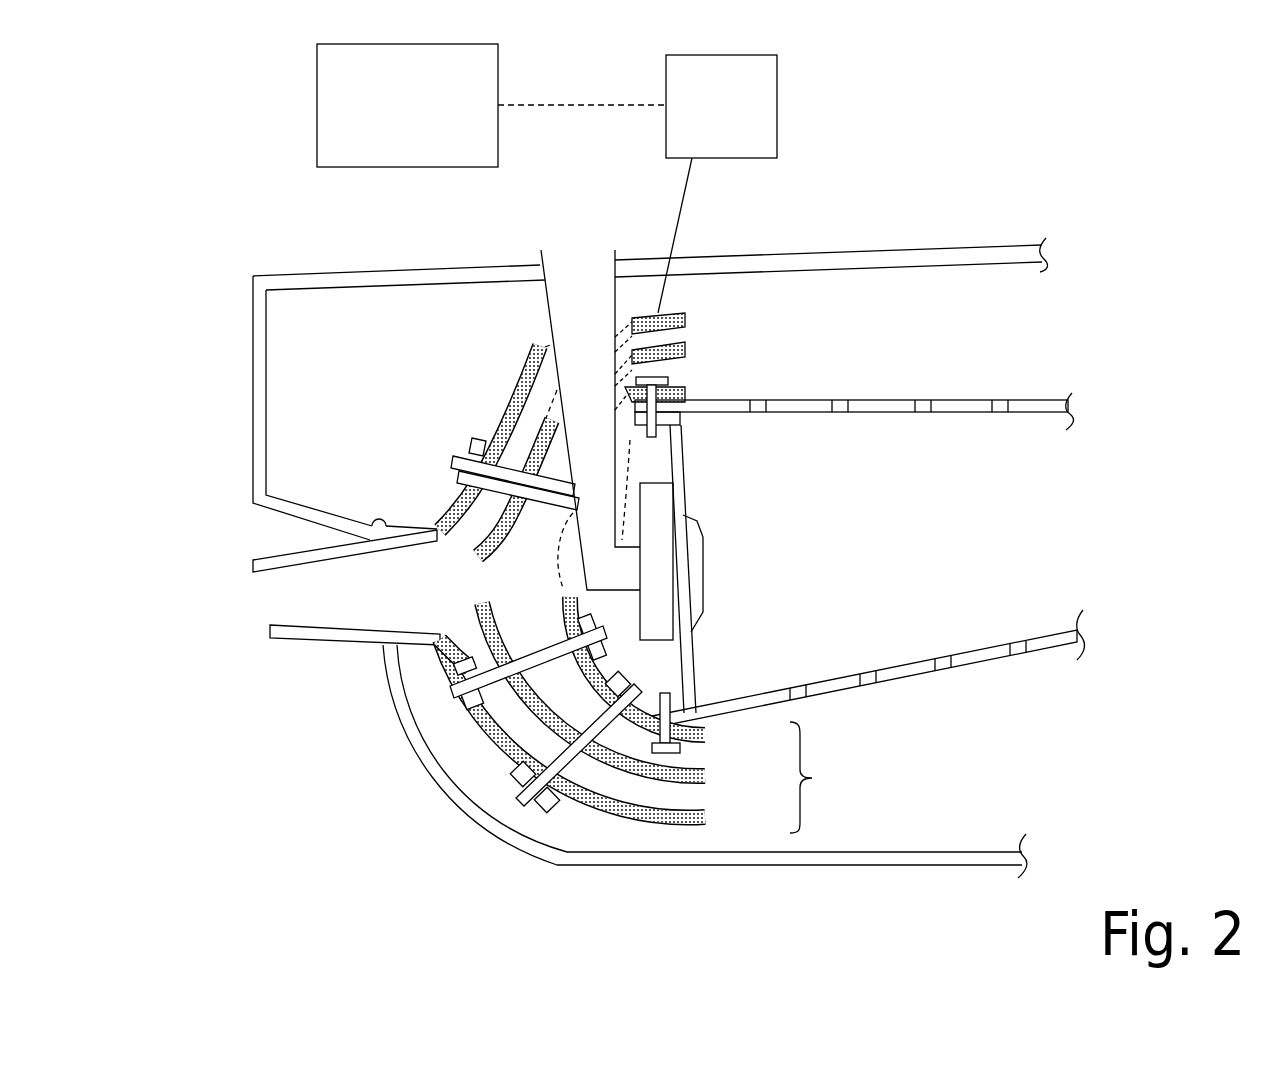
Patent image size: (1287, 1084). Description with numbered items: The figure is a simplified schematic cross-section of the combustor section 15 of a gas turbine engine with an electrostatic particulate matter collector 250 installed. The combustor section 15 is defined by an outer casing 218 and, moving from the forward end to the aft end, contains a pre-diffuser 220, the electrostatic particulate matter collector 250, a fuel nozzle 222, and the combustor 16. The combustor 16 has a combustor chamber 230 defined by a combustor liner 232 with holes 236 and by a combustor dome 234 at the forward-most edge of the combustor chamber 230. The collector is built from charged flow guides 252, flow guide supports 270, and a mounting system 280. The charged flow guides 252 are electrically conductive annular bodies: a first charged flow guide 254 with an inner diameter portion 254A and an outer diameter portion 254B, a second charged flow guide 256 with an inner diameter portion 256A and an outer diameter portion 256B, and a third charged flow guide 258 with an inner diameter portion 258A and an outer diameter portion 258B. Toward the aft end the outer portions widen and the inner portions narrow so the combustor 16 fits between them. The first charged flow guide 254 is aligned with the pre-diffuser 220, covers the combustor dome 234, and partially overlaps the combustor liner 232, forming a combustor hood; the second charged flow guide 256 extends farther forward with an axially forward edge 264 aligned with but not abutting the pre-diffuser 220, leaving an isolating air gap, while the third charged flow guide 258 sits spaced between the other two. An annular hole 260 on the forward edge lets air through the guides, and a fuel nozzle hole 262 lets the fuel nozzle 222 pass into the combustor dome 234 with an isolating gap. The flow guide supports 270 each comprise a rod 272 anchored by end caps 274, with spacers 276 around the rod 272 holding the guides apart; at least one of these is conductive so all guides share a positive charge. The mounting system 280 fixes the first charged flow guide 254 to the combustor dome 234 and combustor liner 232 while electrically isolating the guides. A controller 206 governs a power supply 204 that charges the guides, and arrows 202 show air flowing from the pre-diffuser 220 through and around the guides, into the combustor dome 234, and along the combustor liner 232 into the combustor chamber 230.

The combustor section 15 is at (995, 150).
The combustor 16 is at (1010, 380).
The arrows 202 is at (293, 597).
The power supply 204 is at (778, 82).
The controller 206 is at (317, 80).
The outer casing 218 is at (843, 270).
The pre-diffuser 220 is at (311, 634).
The fuel nozzle 222 is at (568, 302).
The combustor chamber 230 is at (913, 574).
The combustor liner 232 is at (728, 402).
The combustor dome 234 is at (676, 505).
The holes 236 is at (914, 412).
The electrostatic particulate matter collector 250 is at (475, 375).
The charged flow guides 252 is at (826, 777).
The first charged flow guide 254 is at (708, 736).
The inner diameter portion 254A is at (643, 740).
The outer diameter portion 254B is at (680, 388).
The second charged flow guide 256 is at (708, 818).
The inner diameter portion 256A is at (692, 823).
The outer diameter portion 256B is at (672, 318).
The third charged flow guide 258 is at (708, 773).
The inner diameter portion 258A is at (675, 778).
The outer diameter portion 258B is at (680, 345).
The annular hole 260 is at (462, 598).
The fuel nozzle hole 262 is at (622, 327).
The axially forward edge 264 is at (438, 652).
The flow guide supports 270 is at (437, 450).
The rod 272 is at (515, 797).
The end caps 274 is at (618, 688).
The spacers 276 is at (567, 762).
The mounting system 280 is at (652, 418).